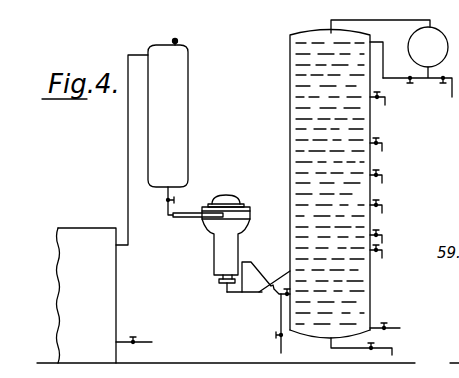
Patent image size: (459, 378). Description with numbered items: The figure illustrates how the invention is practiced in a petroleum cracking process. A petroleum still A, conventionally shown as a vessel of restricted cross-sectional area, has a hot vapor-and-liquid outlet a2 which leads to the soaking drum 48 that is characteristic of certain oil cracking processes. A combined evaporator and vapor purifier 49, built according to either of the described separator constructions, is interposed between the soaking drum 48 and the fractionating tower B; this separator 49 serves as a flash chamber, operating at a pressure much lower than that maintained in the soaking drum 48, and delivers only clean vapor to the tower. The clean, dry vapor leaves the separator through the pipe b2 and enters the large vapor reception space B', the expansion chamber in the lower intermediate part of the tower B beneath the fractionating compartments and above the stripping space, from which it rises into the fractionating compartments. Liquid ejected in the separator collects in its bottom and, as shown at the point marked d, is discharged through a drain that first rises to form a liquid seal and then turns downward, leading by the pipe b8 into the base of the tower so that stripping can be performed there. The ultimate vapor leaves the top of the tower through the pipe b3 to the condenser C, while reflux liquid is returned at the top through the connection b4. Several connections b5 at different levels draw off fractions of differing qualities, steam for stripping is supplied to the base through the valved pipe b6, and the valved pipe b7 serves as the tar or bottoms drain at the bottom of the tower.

The petroleum still A is at (105, 295).
The hot vapor-and-liquid outlet a2 is at (121, 249).
The soaking drum 48 is at (185, 128).
The combined evaporator and vapor purifier 49 is at (219, 241).
The pipe b2 is at (262, 294).
The liquid discharge drain d is at (246, 263).
The pipe b8 is at (274, 303).
The fractionating tower B is at (337, 184).
The vapor reception space B' is at (330, 291).
The pipe b3 is at (384, 22).
The condenser C is at (417, 62).
The reflux connection b4 is at (384, 62).
The draw-off connections b5 is at (383, 176).
The valved steam pipe b6 is at (378, 326).
The valved bottoms drain pipe b7 is at (389, 348).